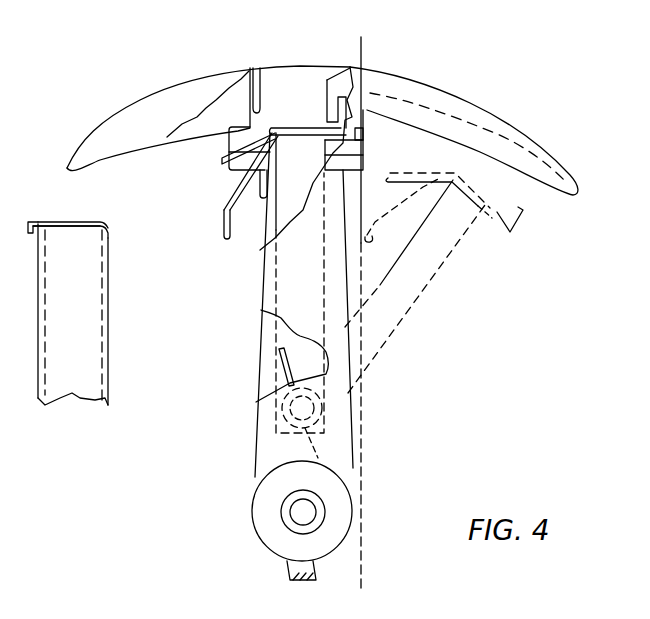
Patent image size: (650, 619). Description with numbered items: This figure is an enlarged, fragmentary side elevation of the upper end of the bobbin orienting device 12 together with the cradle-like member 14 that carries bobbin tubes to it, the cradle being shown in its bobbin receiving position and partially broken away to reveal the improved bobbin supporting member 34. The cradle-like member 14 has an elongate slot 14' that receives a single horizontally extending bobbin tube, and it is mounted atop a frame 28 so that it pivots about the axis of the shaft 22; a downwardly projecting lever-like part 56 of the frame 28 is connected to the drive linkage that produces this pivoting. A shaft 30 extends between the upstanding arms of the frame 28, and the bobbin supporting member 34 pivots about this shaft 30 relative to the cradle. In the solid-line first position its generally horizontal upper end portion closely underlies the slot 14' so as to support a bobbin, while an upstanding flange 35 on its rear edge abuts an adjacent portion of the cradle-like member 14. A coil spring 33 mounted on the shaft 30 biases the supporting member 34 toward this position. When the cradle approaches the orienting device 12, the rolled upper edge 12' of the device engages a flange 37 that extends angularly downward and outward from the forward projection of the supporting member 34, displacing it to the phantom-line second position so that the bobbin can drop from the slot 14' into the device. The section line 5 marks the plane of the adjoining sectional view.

The section line 5- 5 is at (361, 37).
The orienting device 12 is at (99, 314).
The rolled upper edge 12' is at (97, 226).
The cradle-like member 14 is at (322, 120).
The elongate slot 14' is at (296, 144).
The shaft 22 is at (300, 513).
The frame 28 is at (273, 450).
The shaft 30 is at (305, 408).
The coil spring 33 is at (326, 372).
The bobbin supporting member 34 is at (273, 118).
The upstanding flange 35 is at (372, 126).
The flange 37 is at (228, 208).
The lever-like part 56 is at (300, 576).